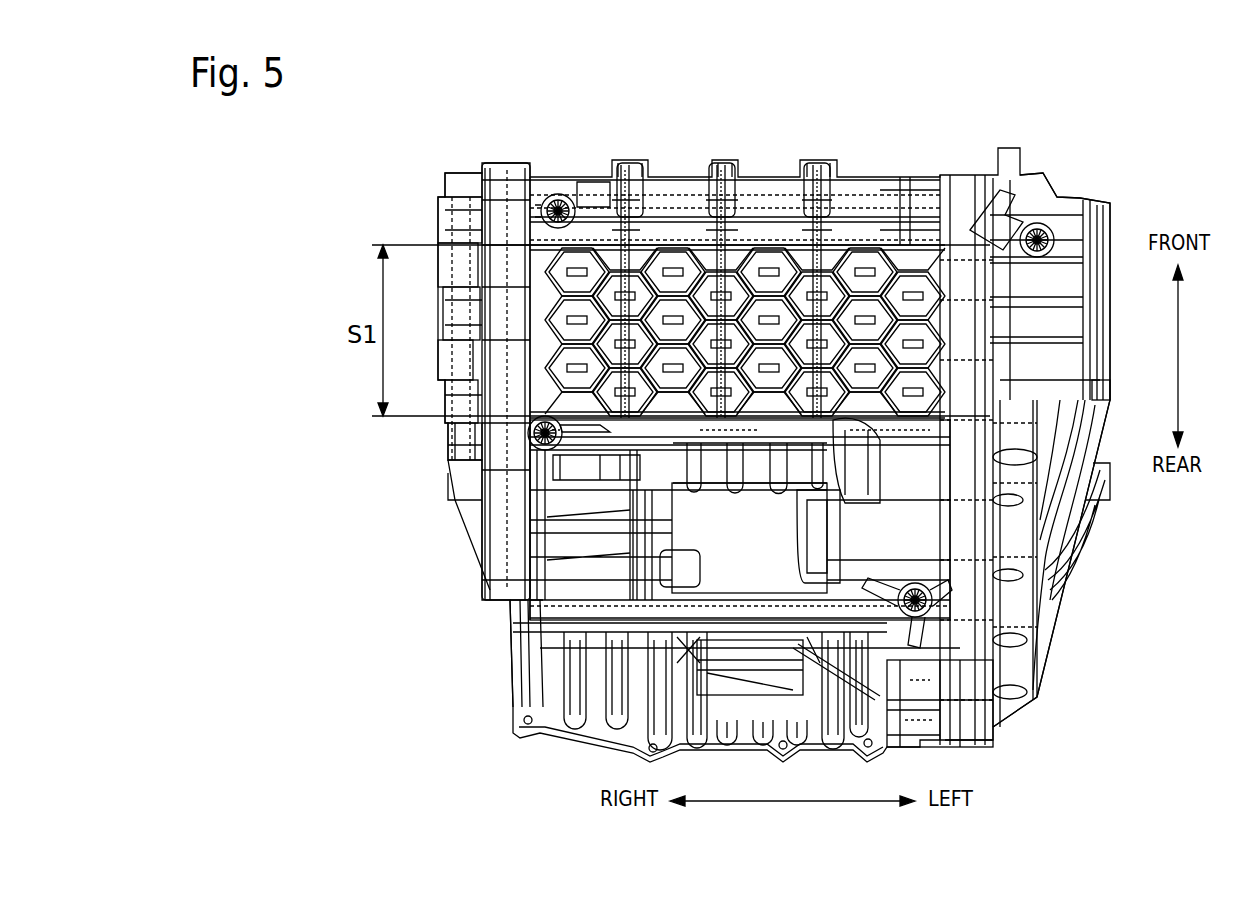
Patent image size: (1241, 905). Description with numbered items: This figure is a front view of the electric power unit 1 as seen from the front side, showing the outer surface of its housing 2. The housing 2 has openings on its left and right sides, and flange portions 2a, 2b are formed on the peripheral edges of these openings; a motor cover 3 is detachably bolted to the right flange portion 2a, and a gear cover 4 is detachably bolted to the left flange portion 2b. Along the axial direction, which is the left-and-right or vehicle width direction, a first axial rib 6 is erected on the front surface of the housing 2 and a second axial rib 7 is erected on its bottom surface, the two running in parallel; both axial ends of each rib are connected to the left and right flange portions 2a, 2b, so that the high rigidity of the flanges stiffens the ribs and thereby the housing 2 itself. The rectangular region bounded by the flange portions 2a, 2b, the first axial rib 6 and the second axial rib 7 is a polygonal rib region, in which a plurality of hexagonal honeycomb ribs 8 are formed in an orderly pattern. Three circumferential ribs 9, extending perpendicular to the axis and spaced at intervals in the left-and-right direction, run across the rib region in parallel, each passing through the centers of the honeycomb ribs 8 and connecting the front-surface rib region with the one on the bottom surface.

The electric power unit 1 is at (962, 155).
The housing 2 is at (858, 174).
The right flange portion 2a is at (516, 163).
The left flange portion 2b is at (988, 747).
The motor cover 3 is at (448, 447).
The gear cover 4 is at (1104, 412).
The first axial rib 6 is at (768, 243).
The second axial rib 7 is at (777, 416).
The honeycomb ribs 8 is at (545, 373).
The circumferential ribs 9 is at (632, 200).